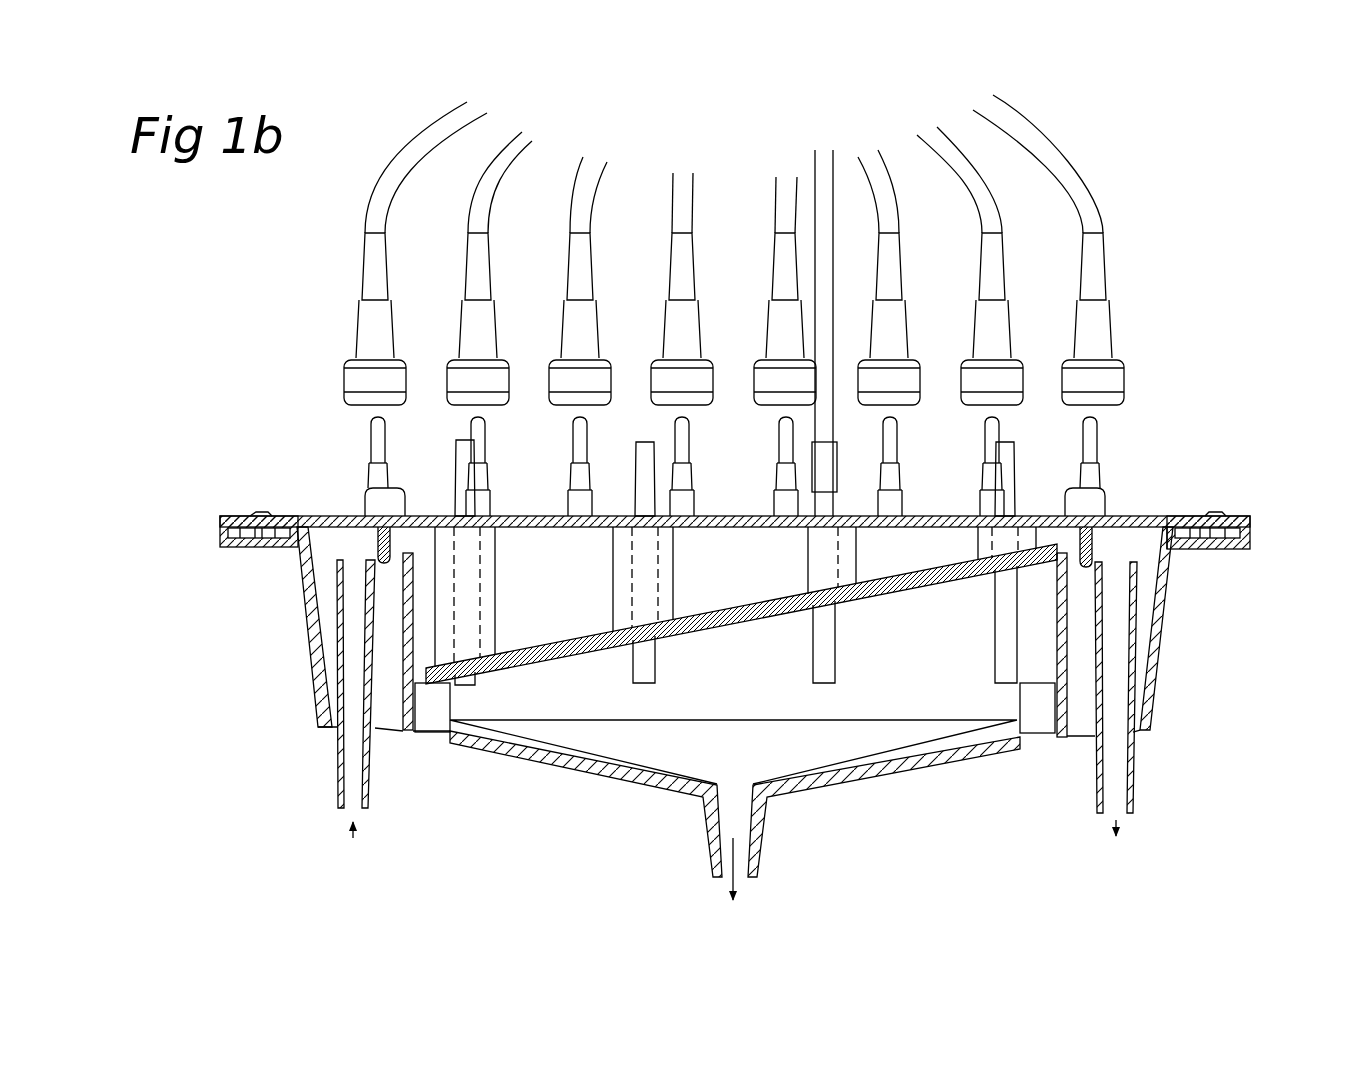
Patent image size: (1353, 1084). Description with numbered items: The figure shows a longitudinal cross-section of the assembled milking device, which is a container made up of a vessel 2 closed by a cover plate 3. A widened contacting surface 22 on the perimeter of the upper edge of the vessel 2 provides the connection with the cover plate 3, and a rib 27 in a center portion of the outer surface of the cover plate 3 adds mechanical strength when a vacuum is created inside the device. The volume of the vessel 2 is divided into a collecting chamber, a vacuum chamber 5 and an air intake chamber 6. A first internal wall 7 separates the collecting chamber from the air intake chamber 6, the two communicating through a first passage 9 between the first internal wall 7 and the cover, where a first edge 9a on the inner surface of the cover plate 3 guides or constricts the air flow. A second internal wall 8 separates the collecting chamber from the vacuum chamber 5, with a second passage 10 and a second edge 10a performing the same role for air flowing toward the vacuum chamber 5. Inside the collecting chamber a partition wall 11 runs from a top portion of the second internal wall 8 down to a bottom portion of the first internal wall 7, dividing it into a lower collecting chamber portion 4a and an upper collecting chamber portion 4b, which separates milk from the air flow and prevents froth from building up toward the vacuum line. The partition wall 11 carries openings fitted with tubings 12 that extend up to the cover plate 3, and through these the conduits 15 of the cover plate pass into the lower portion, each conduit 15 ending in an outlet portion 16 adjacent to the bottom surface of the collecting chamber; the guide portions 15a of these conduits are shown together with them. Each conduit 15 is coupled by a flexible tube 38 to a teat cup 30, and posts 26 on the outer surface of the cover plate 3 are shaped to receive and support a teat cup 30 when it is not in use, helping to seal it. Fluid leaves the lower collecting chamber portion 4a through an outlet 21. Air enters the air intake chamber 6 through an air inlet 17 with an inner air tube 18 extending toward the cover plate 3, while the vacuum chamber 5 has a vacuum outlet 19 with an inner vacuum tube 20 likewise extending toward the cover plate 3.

The vessel 2 is at (961, 756).
The cover plate 3 is at (342, 530).
The lower collecting chamber portion 4a is at (749, 657).
The upper collecting chamber portion 4b is at (749, 559).
The vacuum chamber 5 is at (1146, 577).
The air intake chamber 6 is at (328, 578).
The first internal wall 7 is at (407, 670).
The second internal wall 8 is at (1063, 682).
The first passage 9 is at (375, 563).
The first edge 9a is at (390, 544).
The second passage 10 is at (1079, 578).
The second edge 10a is at (1054, 547).
The partition wall 11 is at (848, 598).
The tubings 12 is at (497, 578).
The conduits 15 is at (738, 464).
The post guide 15a is at (463, 453).
The outlet portion 16 is at (641, 665).
The air inlet 17 is at (338, 767).
The inner air tube 18 is at (338, 618).
The vacuum outlet 19 is at (1134, 773).
The inner vacuum tube 20 is at (1134, 610).
The outlet 21 is at (733, 830).
The widened contacting surface 22 is at (255, 514).
The posts 26 is at (583, 447).
The rib 27 is at (1150, 527).
The teat cup 30 is at (440, 344).
The flexible tube 38 is at (600, 156).